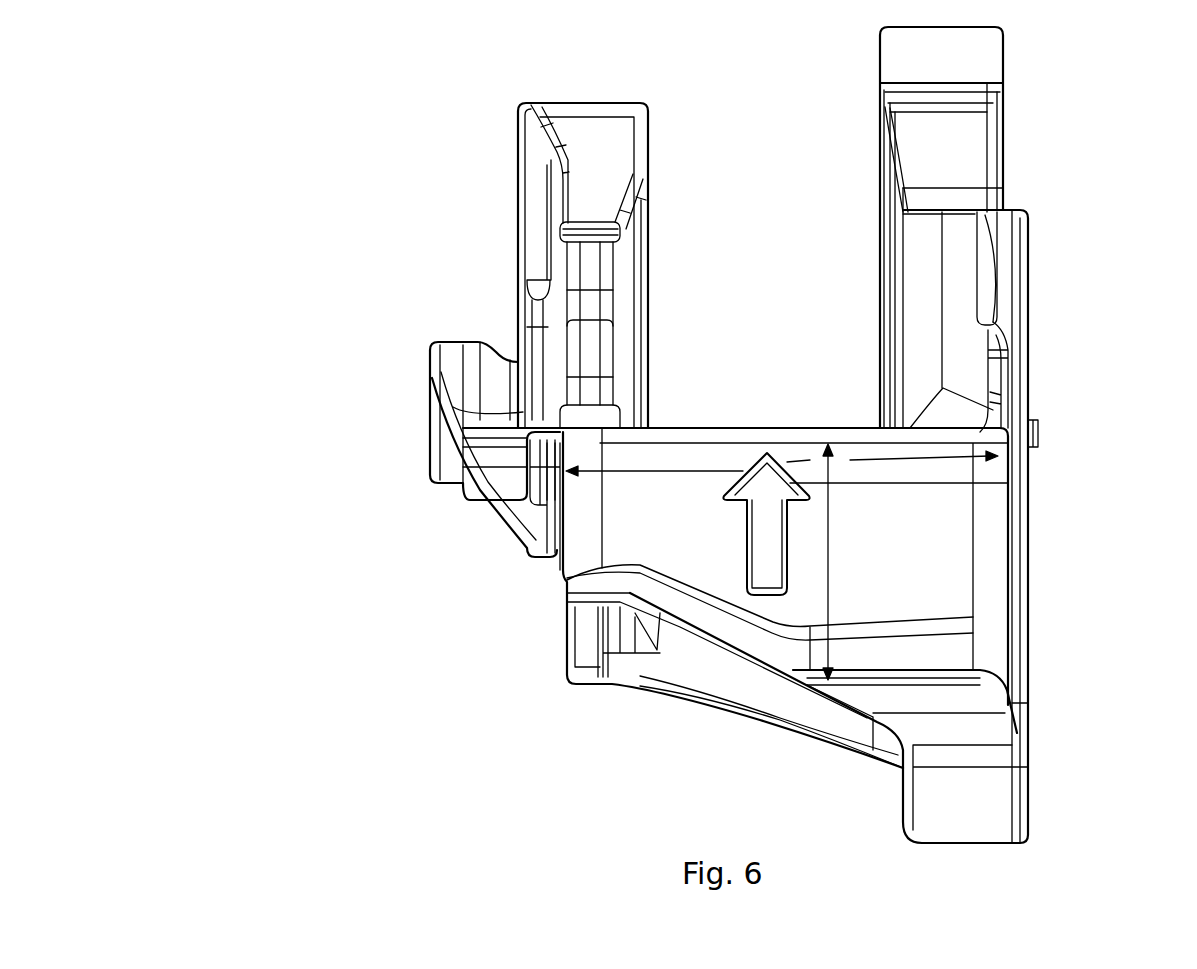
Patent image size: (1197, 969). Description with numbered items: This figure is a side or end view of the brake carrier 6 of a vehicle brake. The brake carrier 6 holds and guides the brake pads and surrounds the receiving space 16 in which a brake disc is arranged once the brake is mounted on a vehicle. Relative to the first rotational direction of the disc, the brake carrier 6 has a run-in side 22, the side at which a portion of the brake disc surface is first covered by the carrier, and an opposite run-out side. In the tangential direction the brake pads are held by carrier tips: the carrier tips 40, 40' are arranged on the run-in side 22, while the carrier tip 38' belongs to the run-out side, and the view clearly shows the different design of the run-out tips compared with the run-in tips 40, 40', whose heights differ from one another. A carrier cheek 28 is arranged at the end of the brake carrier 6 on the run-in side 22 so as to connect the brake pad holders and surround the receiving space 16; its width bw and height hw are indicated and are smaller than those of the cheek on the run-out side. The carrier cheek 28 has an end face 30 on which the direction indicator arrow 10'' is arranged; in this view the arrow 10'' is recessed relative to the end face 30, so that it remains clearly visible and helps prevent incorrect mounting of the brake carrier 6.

The brake carrier 6 is at (283, 205).
The direction indicator arrow 10'' is at (902, 526).
The receiving space 16 is at (753, 165).
The run-in side 22 is at (690, 736).
The carrier cheek 28 is at (630, 538).
The end face 30 is at (940, 592).
The carrier tip 38' is at (1002, 55).
The carrier tip 40 is at (533, 257).
The carrier tip 40' is at (996, 255).